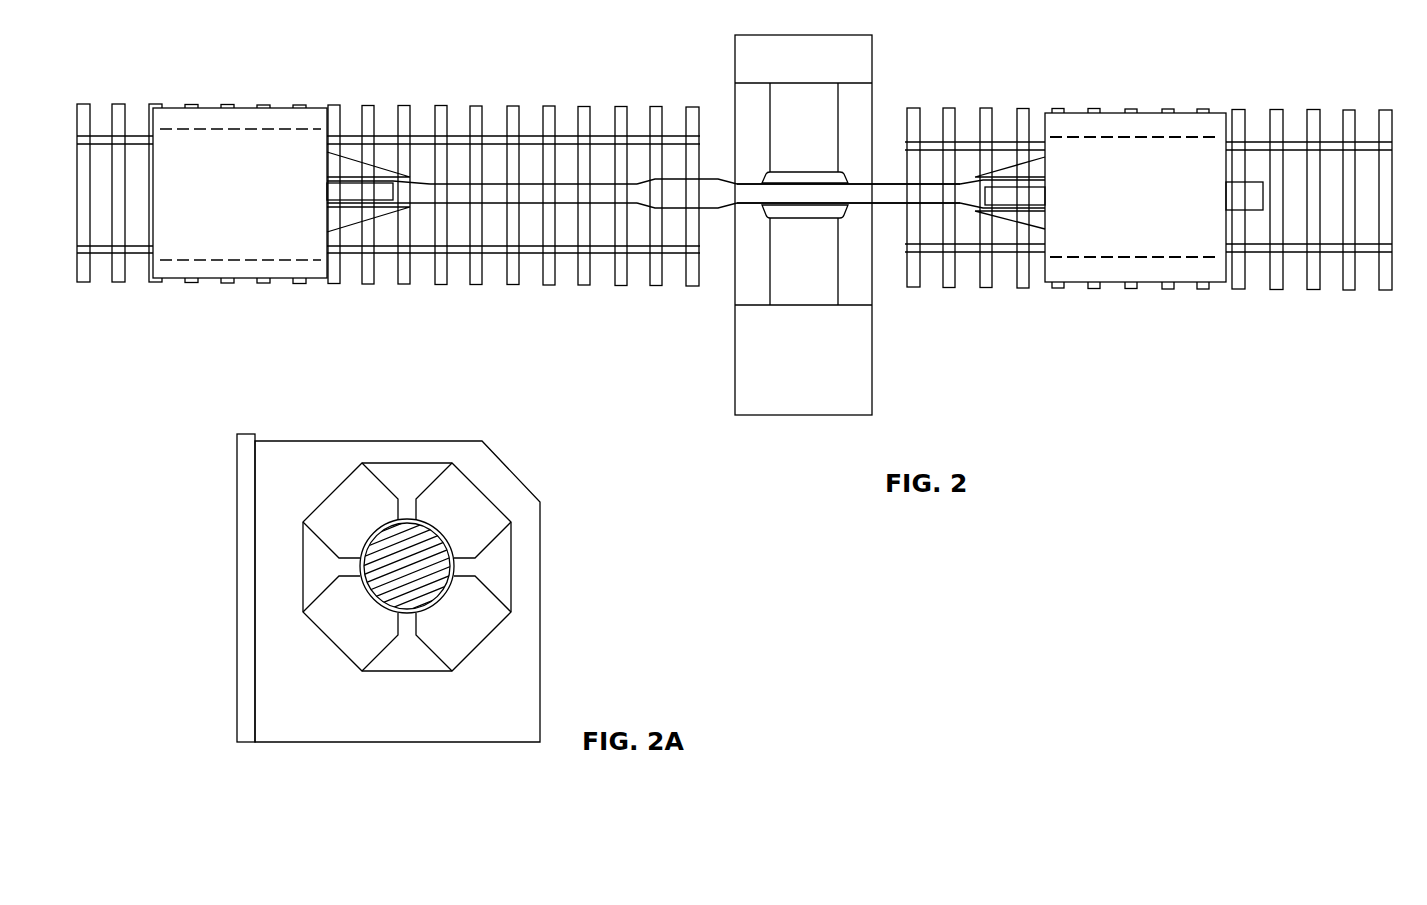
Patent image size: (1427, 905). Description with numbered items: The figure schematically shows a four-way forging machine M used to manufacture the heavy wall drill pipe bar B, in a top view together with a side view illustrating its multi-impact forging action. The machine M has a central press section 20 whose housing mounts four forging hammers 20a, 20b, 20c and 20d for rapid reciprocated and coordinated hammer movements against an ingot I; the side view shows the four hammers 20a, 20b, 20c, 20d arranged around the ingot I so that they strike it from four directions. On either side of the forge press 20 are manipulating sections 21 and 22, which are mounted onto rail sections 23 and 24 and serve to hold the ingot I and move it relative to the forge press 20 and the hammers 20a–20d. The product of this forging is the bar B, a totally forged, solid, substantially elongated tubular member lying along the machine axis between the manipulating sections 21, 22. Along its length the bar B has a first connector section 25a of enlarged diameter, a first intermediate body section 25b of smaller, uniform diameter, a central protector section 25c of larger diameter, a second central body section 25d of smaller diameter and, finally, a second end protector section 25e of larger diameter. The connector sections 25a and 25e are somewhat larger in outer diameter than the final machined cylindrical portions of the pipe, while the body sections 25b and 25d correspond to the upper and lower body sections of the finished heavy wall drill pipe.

In FIG. 2, the central press section 20 is at (857, 239).
In FIG. 2A, the central press section 20 is at (411, 593).
In FIG. 2, the forging hammer 20a is at (825, 125).
In FIG. 2A, the forging hammer 20a is at (338, 503).
In FIG. 2, the forging hammer 20b is at (820, 261).
In FIG. 2A, the forging hammer 20b is at (478, 500).
In FIG. 2A, the forging hammer 20c is at (343, 640).
In FIG. 2A, the forging hammer 20d is at (477, 634).
In FIG. 2, the manipulating section 21 is at (248, 215).
In FIG. 2, the manipulating section 22 is at (1150, 215).
In FIG. 2, the rail section 23 is at (477, 105).
In FIG. 2, the rail section 24 is at (1023, 108).
In FIG. 2, the first connector section 25a is at (417, 182).
In FIG. 2, the first intermediate body section 25b is at (563, 186).
In FIG. 2, the central protector section 25c is at (670, 203).
In FIG. 2, the second central body section 25d is at (890, 200).
In FIG. 2, the second end protector section 25e is at (965, 182).
In FIG. 2, the heavy wall drill pipe bar B is at (717, 178).
In FIG. 2A, the ingot I is at (454, 565).
In FIG. 2, the four-way forging machine M is at (885, 360).